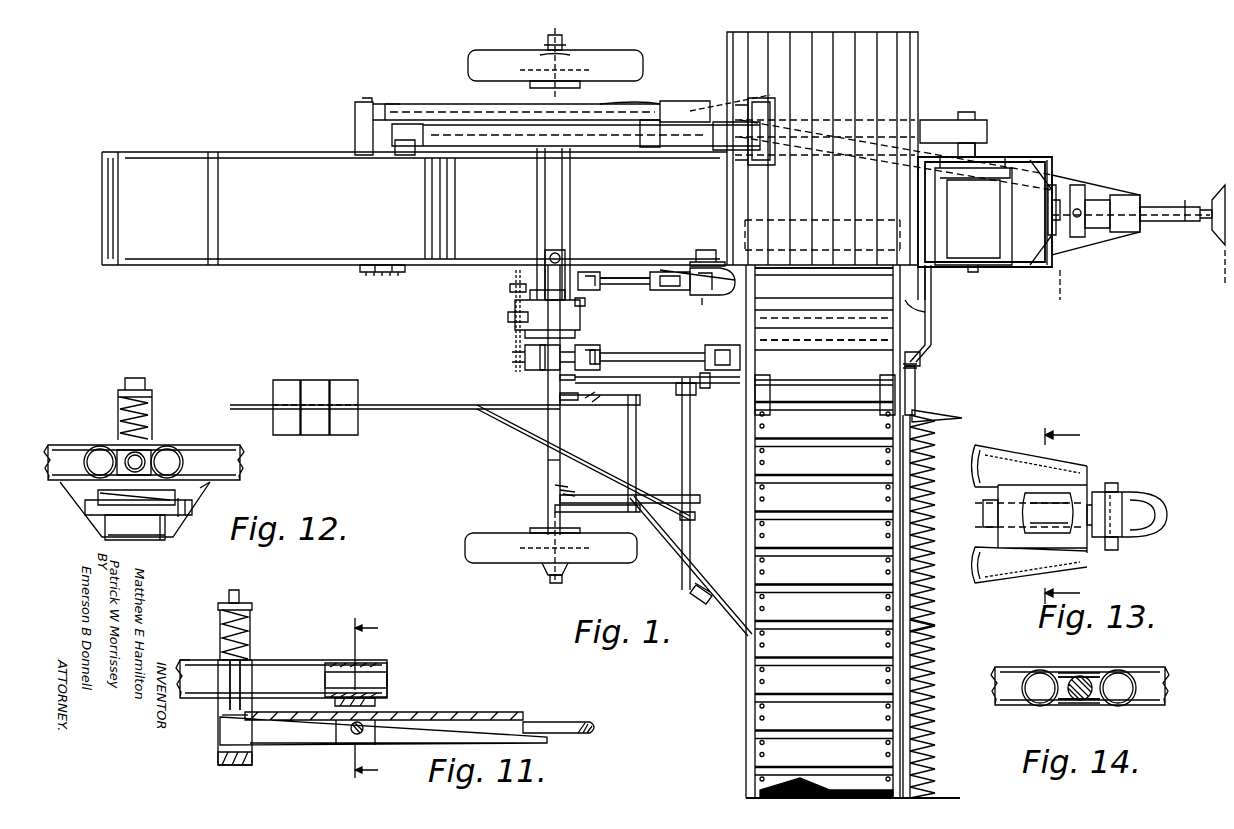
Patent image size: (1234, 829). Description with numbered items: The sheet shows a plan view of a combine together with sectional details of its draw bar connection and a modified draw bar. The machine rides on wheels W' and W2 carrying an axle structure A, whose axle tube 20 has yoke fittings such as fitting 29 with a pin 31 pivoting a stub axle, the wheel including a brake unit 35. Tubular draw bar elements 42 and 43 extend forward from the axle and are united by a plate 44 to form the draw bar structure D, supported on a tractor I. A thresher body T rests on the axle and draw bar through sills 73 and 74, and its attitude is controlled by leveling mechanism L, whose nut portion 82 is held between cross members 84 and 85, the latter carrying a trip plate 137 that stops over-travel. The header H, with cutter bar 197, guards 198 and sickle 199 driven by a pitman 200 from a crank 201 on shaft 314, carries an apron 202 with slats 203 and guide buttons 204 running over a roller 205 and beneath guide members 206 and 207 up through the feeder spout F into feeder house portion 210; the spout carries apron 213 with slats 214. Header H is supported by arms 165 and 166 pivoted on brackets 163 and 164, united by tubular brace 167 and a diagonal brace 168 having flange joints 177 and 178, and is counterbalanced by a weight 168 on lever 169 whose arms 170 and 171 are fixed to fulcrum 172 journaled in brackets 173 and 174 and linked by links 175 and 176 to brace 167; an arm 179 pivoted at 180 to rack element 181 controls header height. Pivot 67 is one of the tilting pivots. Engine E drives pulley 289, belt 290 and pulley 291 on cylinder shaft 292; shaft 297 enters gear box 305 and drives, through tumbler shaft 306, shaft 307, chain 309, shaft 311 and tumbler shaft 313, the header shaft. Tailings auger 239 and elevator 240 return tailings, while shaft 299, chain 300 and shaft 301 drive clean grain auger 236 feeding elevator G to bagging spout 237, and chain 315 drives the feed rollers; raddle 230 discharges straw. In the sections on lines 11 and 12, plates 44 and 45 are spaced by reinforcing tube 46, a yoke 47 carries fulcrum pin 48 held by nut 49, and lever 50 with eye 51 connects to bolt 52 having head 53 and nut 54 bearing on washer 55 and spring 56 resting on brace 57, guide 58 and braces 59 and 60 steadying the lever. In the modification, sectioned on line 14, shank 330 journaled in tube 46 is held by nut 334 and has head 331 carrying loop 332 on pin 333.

In FIG. 1, the second raddle 230 is at (172, 262).
In FIG. 1, the thresher body T is at (278, 265).
In FIG. 1, the shaft 299 is at (366, 273).
In FIG. 1, the chain 300 is at (382, 274).
In FIG. 1, the shaft 301 is at (396, 273).
In FIG. 1, the tailings auger 239 is at (355, 133).
In FIG. 1, the clean grain auger 236 is at (392, 147).
In FIG. 1, the tailings elevator 240 is at (443, 106).
In FIG. 1, the clean grain elevator G is at (432, 118).
In FIG. 1, the pulley 291 is at (640, 100).
In FIG. 1, the tubular draw bar element 42 is at (610, 98).
In FIG. 12, the tubular draw bar element 42 is at (172, 446).
In FIG. 11, the tubular draw bar element 42 is at (303, 660).
In FIG. 14, the tubular draw bar element 42 is at (1130, 668).
In FIG. 1, the shaft 292 is at (650, 150).
In FIG. 1, the bagging spout 237 is at (770, 110).
In FIG. 1, the wheel W' is at (557, 50).
In FIG. 1, the brake unit 35 is at (548, 46).
In FIG. 1, the pin 31 is at (580, 48).
In FIG. 1, the fitting 29 is at (590, 60).
In FIG. 1, the apron 213 is at (889, 415).
In FIG. 1, the slats 214 is at (868, 300).
In FIG. 1, the shaft 314 is at (800, 372).
In FIG. 1, the guide member 206 is at (770, 412).
In FIG. 1, the guide member 207 is at (883, 412).
In FIG. 1, the header H is at (738, 698).
In FIG. 1, the roller 205 is at (748, 797).
In FIG. 1, the apron 202 is at (824, 561).
In FIG. 1, the slats 203 is at (856, 622).
In FIG. 1, the guide buttons 204 is at (888, 644).
In FIG. 1, the cutter bar 197 is at (935, 618).
In FIG. 1, the guards 198 is at (945, 638).
In FIG. 1, the sickle 199 is at (938, 424).
In FIG. 1, the rack element 181 is at (928, 325).
In FIG. 1, the pivot 180 is at (925, 345).
In FIG. 1, the arm 179 is at (921, 356).
In FIG. 1, the crank 201 is at (918, 367).
In FIG. 1, the pitman 200 is at (916, 384).
In FIG. 1, the feeder spout F is at (925, 308).
In FIG. 1, the feeder house portion 210 is at (925, 275).
In FIG. 1, the engine E is at (992, 190).
In FIG. 1, the pulley 289 is at (958, 124).
In FIG. 1, the belt 290 is at (935, 125).
In FIG. 1, the angle iron 73 is at (998, 270).
In FIG. 1, the angle iron 74 is at (1028, 160).
In FIG. 1, the pivot 67 is at (1060, 185).
In FIG. 1, the draw bar structure D is at (1092, 255).
In FIG. 12, the draw bar structure D is at (212, 488).
In FIG. 11, the draw bar structure D is at (193, 660).
In FIG. 1, the cross piece 57 is at (1078, 185).
In FIG. 11, the cross piece 57 is at (252, 668).
In FIG. 1, the washer 55 is at (1098, 200).
In FIG. 11, the washer 55 is at (252, 606).
In FIG. 1, the plate 44 is at (1122, 195).
In FIG. 12, the plate 44 is at (118, 455).
In FIG. 11, the plate 44 is at (338, 663).
In FIG. 14, the plate 44 is at (1066, 673).
In FIG. 1, the section line 11 is at (1138, 253).
In FIG. 1, the tractor I is at (1215, 200).
In FIG. 1, the cross member 84 is at (537, 225).
In FIG. 1, the cross member 85 is at (568, 232).
In FIG. 1, the nut portion 82 is at (547, 262).
In FIG. 1, the axle tube 20 is at (548, 386).
In FIG. 1, the leveling mechanism L is at (515, 283).
In FIG. 1, the shaft 307 is at (510, 288).
In FIG. 1, the chain 309 is at (508, 318).
In FIG. 1, the shaft 311 is at (525, 350).
In FIG. 1, the trip plate 137 is at (585, 302).
In FIG. 1, the tubular draw bar element 43 is at (672, 292).
In FIG. 12, the tubular draw bar element 43 is at (82, 452).
In FIG. 14, the tubular draw bar element 43 is at (1035, 668).
In FIG. 1, the tumbler shaft 306 is at (640, 285).
In FIG. 1, the gear box 305 is at (718, 296).
In FIG. 1, the chain 315 is at (740, 322).
In FIG. 1, the shaft 297 is at (704, 262).
In FIG. 1, the tumbler shaft 313 is at (665, 360).
In FIG. 1, the arm 165 is at (640, 362).
In FIG. 1, the bracket 163 is at (560, 378).
In FIG. 1, the bracket 173 is at (560, 395).
In FIG. 1, the flange joint 177 is at (700, 388).
In FIG. 1, the link 175 is at (696, 415).
In FIG. 1, the tubular brace 167 is at (690, 452).
In FIG. 1, the arm 170 is at (580, 408).
In FIG. 1, the fulcrum member 172 is at (636, 445).
In FIG. 1, the arm 171 is at (598, 472).
In FIG. 1, the arm 166 is at (662, 495).
In FIG. 1, the bracket 174 is at (570, 510).
In FIG. 1, the bracket 164 is at (555, 490).
In FIG. 1, the link 176 is at (695, 515).
In FIG. 1, the counterbalancing weight 168 is at (345, 380).
In FIG. 1, the lever 169 is at (428, 405).
In FIG. 1, the flange joint 178 is at (706, 585).
In FIG. 1, the axle structure A is at (546, 463).
In FIG. 1, the wheel W2 is at (525, 570).
In FIG. 12, the nut 54 is at (142, 388).
In FIG. 11, the nut 54 is at (242, 596).
In FIG. 12, the tubular reinforcement 46 is at (125, 462).
In FIG. 11, the tubular reinforcement 46 is at (388, 676).
In FIG. 13, the tubular reinforcement 46 is at (1060, 495).
In FIG. 14, the tubular reinforcement 46 is at (1085, 676).
In FIG. 12, the plate 45 is at (82, 490).
In FIG. 11, the plate 45 is at (378, 704).
In FIG. 14, the plate 45 is at (1098, 703).
In FIG. 12, the diagonal brace 60 is at (85, 508).
In FIG. 12, the yoke-like member 47 is at (95, 505).
In FIG. 12, the fulcrum pin 48 is at (112, 537).
In FIG. 11, the fulcrum pin 48 is at (355, 735).
In FIG. 12, the diagonal brace 59 is at (190, 510).
In FIG. 12, the nut 49 is at (180, 518).
In FIG. 12, the lever 50 is at (160, 532).
In FIG. 11, the lever 50 is at (440, 712).
In FIG. 12, the guide member 58 is at (152, 540).
In FIG. 11, the guide member 58 is at (218, 762).
In FIG. 11, the bolt 52 is at (232, 678).
In FIG. 11, the head 53 is at (222, 718).
In FIG. 11, the spring 56 is at (250, 632).
In FIG. 11, the eye portion 51 is at (565, 722).
In FIG. 11, the section line 12 is at (378, 698).
In FIG. 13, the shank portion 330 is at (1080, 560).
In FIG. 14, the shank portion 330 is at (1068, 703).
In FIG. 13, the nut 334 is at (983, 515).
In FIG. 13, the loop 332 is at (1165, 518).
In FIG. 13, the pin 333 is at (1118, 488).
In FIG. 13, the head 331 is at (1118, 540).
In FIG. 13, the section line 14 is at (1072, 516).